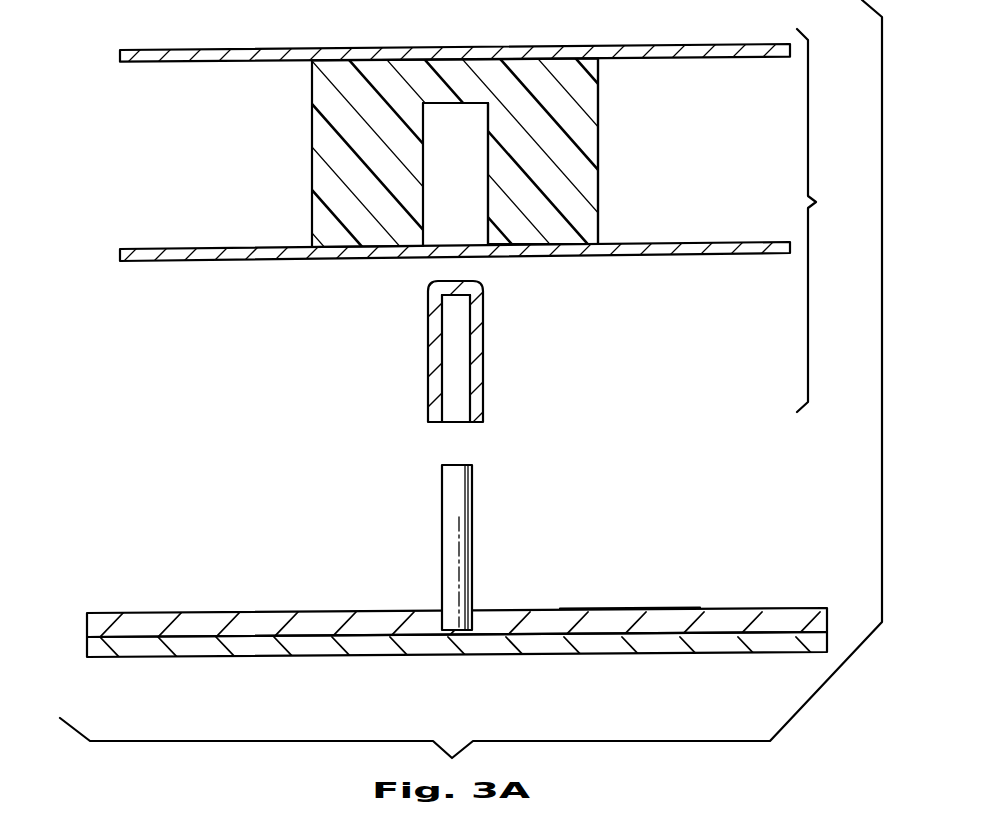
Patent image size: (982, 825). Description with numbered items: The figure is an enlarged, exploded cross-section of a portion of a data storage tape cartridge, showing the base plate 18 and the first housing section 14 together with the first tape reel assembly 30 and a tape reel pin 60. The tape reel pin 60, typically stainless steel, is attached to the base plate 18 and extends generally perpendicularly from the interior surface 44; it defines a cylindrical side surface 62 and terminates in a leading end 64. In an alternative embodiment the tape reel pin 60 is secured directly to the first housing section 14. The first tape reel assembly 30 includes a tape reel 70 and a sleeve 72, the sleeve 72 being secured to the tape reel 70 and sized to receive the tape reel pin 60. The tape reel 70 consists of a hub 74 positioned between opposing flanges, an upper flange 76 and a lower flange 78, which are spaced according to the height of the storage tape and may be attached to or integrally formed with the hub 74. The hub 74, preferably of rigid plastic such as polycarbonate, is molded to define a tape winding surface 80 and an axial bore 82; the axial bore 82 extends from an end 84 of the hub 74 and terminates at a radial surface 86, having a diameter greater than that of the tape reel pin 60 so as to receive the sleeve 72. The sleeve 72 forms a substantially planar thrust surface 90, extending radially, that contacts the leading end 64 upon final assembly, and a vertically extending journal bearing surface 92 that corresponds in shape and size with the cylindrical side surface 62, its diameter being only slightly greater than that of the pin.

The tape reel 70 is at (429, 133).
The upper flange 76 is at (226, 54).
The lower flange 78 is at (215, 252).
The hub 74 is at (323, 140).
The tape winding surface 80 is at (592, 126).
The axial bore 82 is at (488, 206).
The end of the hub 84 is at (575, 244).
The radial surface 86 is at (445, 104).
The first tape reel assembly 30 is at (824, 220).
The sleeve 72 is at (453, 351).
The thrust surface 90 is at (448, 302).
The journal bearing surface 92 is at (440, 408).
The tape reel pin 60 is at (471, 530).
The cylindrical side surface 62 is at (440, 497).
The leading end 64 is at (455, 462).
The base plate 18 is at (263, 617).
The first housing section 14 is at (302, 648).
The interior surface 44 is at (622, 607).